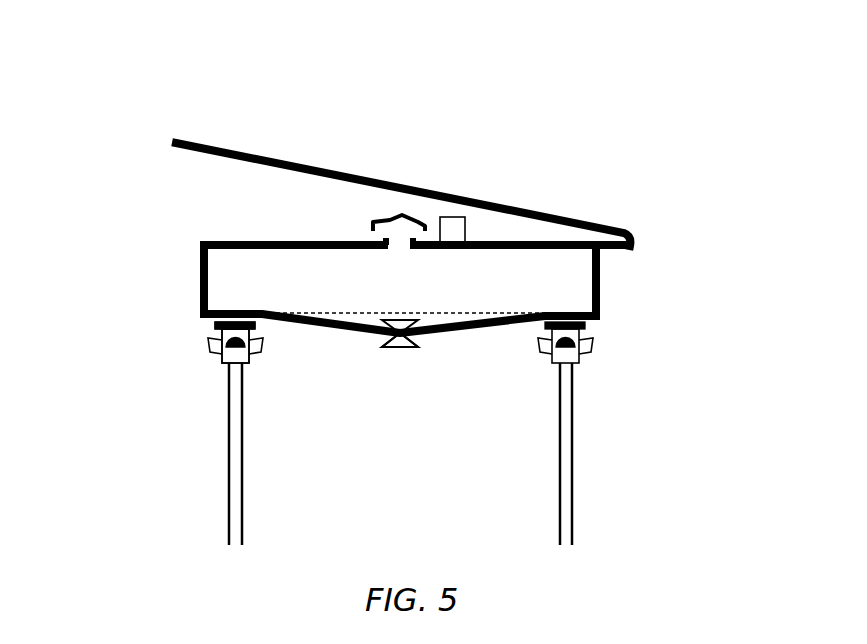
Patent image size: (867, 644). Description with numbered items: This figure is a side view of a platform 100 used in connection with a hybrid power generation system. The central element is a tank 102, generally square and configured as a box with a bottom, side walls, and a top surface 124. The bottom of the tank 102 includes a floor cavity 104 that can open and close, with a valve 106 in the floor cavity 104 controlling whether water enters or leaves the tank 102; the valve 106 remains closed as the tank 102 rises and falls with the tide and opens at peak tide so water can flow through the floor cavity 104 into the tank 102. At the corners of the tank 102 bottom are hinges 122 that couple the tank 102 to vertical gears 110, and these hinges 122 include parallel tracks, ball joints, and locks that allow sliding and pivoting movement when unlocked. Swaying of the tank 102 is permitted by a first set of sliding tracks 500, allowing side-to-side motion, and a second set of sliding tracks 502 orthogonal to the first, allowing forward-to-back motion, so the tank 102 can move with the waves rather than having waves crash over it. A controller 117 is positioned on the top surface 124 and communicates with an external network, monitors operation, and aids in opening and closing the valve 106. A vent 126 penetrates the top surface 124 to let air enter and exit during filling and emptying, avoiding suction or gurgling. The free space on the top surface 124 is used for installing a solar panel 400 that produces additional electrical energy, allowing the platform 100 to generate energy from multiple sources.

The platform 100 is at (470, 78).
The tank 102 is at (198, 258).
The floor cavity 104 is at (422, 341).
The valve 106 is at (402, 352).
The vertical gears 110 is at (246, 455).
The controller 117 is at (452, 215).
The hinge 122 is at (212, 336).
The top surface 124 is at (228, 240).
The vent 126 is at (372, 221).
The solar panel 400 is at (532, 206).
The first set of sliding tracks 500 is at (212, 324).
The second set of sliding tracks 502 is at (152, 353).